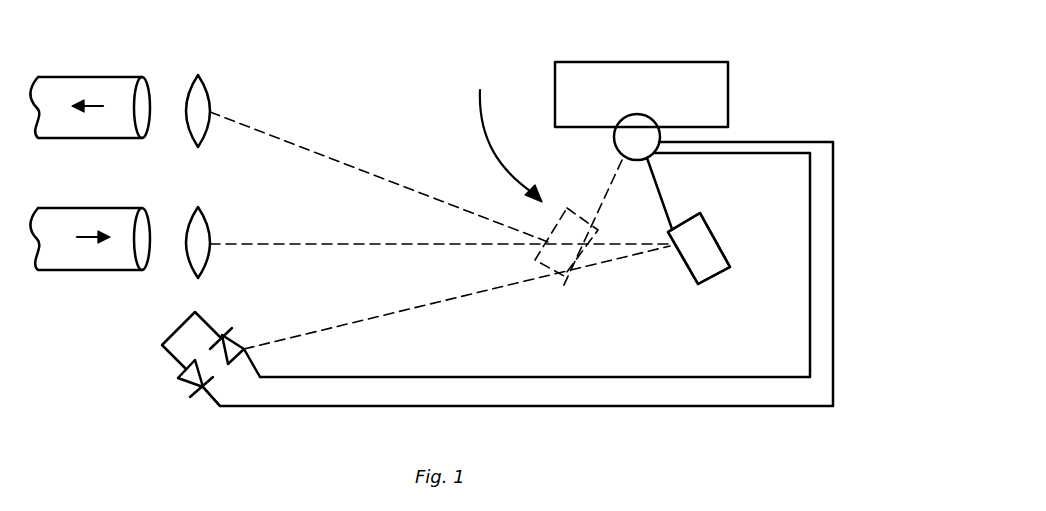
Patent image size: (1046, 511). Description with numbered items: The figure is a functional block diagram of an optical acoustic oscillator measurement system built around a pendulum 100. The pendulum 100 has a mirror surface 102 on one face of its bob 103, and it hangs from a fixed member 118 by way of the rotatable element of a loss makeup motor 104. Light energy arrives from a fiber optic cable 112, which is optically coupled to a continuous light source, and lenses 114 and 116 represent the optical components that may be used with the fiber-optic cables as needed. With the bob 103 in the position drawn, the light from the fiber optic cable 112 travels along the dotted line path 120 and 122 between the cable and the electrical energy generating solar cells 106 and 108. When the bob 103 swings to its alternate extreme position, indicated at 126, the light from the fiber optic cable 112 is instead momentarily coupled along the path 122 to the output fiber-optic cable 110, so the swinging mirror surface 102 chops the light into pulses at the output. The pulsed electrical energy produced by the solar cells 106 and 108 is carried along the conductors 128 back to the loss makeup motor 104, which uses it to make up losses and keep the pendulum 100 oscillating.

The pendulum 100 is at (668, 188).
The mirror surface 102 is at (668, 233).
The bob 103 is at (713, 280).
The loss makeup motor 104 is at (617, 148).
The solar cell 106 is at (178, 378).
The solar cell 108 is at (232, 338).
The output fiber-optic cable 110 is at (85, 77).
The fiber optic cable 112 is at (85, 208).
The lens 114 is at (198, 76).
The lens 116 is at (198, 208).
The fixed member 118 is at (643, 62).
The dotted line path 120 is at (442, 303).
The dotted line path 122 is at (360, 245).
The alternate extreme position 126 is at (502, 132).
The conductors 128 is at (868, 360).